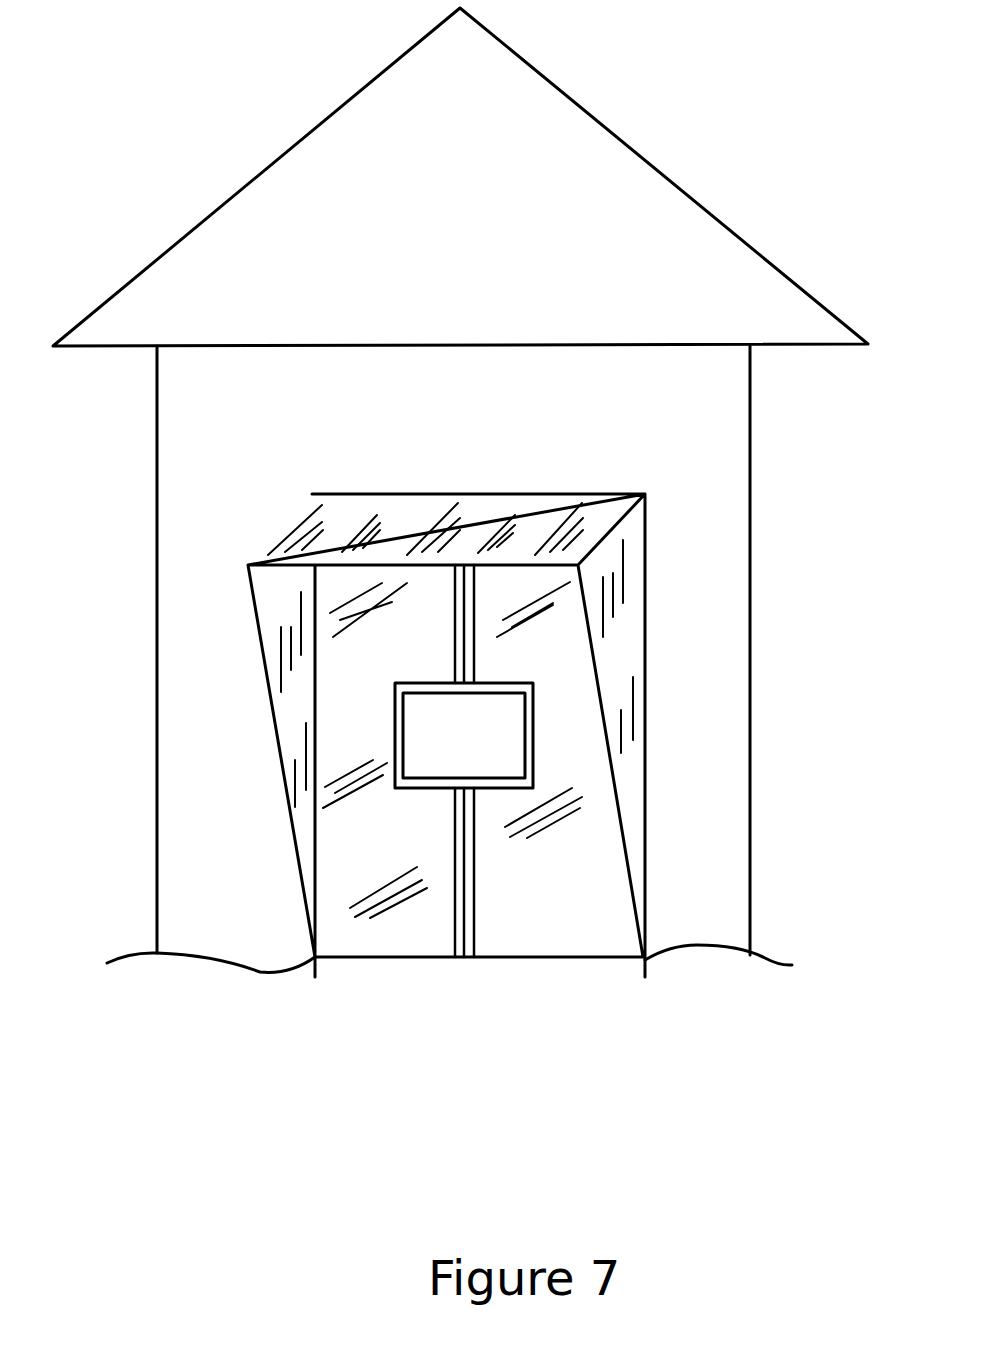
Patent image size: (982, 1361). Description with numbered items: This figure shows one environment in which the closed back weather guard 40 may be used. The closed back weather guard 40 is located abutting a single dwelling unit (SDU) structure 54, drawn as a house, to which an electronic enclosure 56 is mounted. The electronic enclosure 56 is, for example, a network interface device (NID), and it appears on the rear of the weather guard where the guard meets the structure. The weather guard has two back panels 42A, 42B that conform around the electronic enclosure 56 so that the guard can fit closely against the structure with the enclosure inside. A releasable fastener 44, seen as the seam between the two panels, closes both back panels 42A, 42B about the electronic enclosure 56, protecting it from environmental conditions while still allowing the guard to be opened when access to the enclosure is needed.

The single dwelling unit (SDU) structure 54 is at (665, 175).
The closed back weather guard 40 is at (623, 616).
The back panel 42A is at (390, 932).
The back panel 42B is at (558, 935).
The releasable fastener 44 is at (467, 935).
The electronic enclosure 56 is at (503, 767).